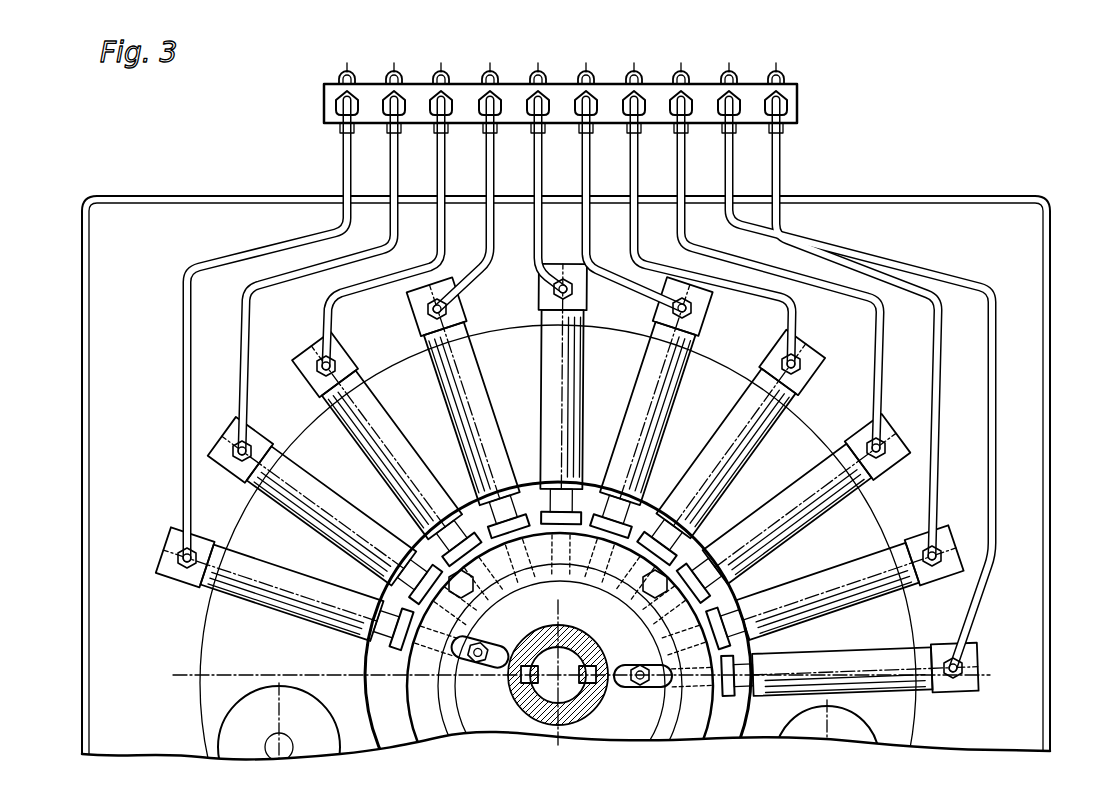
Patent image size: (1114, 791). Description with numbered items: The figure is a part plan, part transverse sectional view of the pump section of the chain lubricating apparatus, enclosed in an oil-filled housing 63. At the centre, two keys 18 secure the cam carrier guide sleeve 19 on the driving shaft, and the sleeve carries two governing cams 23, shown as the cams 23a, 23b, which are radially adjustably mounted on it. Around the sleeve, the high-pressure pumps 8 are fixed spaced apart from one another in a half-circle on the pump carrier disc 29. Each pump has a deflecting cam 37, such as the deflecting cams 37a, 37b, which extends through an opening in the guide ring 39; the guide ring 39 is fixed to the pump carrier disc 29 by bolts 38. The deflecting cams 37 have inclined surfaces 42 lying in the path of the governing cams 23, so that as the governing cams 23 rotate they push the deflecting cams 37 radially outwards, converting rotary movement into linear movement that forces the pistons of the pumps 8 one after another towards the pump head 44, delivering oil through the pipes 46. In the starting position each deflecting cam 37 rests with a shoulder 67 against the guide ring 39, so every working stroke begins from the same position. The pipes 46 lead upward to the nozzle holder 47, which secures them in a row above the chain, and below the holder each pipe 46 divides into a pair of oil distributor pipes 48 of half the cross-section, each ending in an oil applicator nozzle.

The high-pressure pump 8 is at (458, 402).
The key 18 is at (573, 627).
The cam carrier guide sleeve 19 is at (613, 717).
The governing cam 23 is at (558, 674).
The governing cam 23a is at (628, 660).
The governing cam 23b is at (455, 730).
The pump carrier disc 29 is at (233, 627).
The deflecting cam 37 is at (585, 548).
The deflecting cam 37a is at (413, 643).
The deflecting cam 37b is at (700, 668).
The bolt 38 is at (300, 545).
The guide ring 39 is at (737, 708).
The inclined surface 42 is at (558, 594).
The pump head 44 is at (316, 384).
The pipe 46 is at (540, 288).
The nozzle holder 47 is at (333, 92).
The oil distributor pipe 48 is at (445, 72).
The oil-filled housing 63 is at (1050, 465).
The shoulder 67 is at (538, 517).